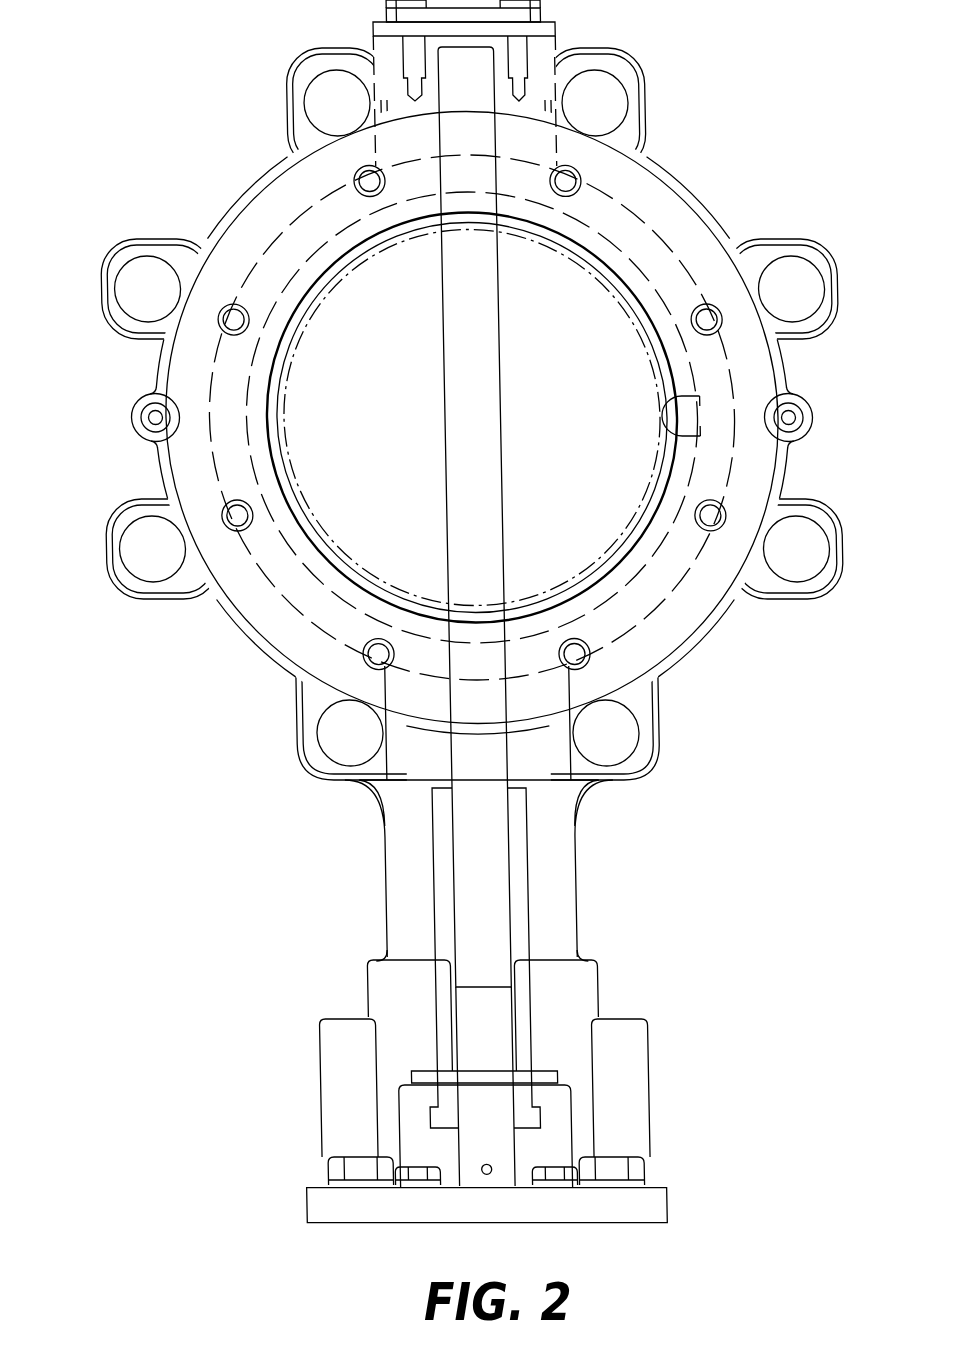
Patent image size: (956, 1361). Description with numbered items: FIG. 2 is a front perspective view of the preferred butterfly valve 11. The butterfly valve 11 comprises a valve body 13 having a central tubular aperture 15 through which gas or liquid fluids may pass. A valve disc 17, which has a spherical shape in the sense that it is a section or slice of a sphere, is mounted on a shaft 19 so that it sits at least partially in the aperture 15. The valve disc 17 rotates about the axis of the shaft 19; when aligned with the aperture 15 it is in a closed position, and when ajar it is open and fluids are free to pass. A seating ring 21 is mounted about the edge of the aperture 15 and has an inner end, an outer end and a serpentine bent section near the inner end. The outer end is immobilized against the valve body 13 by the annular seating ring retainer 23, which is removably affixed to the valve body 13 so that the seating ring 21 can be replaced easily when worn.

The butterfly valve 11 is at (665, 130).
The valve body 13 is at (703, 204).
The central tubular aperture 15 is at (600, 466).
The valve disc 17 is at (345, 466).
The shaft 19 is at (477, 524).
The seating ring 21 is at (622, 548).
The seating ring retainer 23 is at (265, 230).